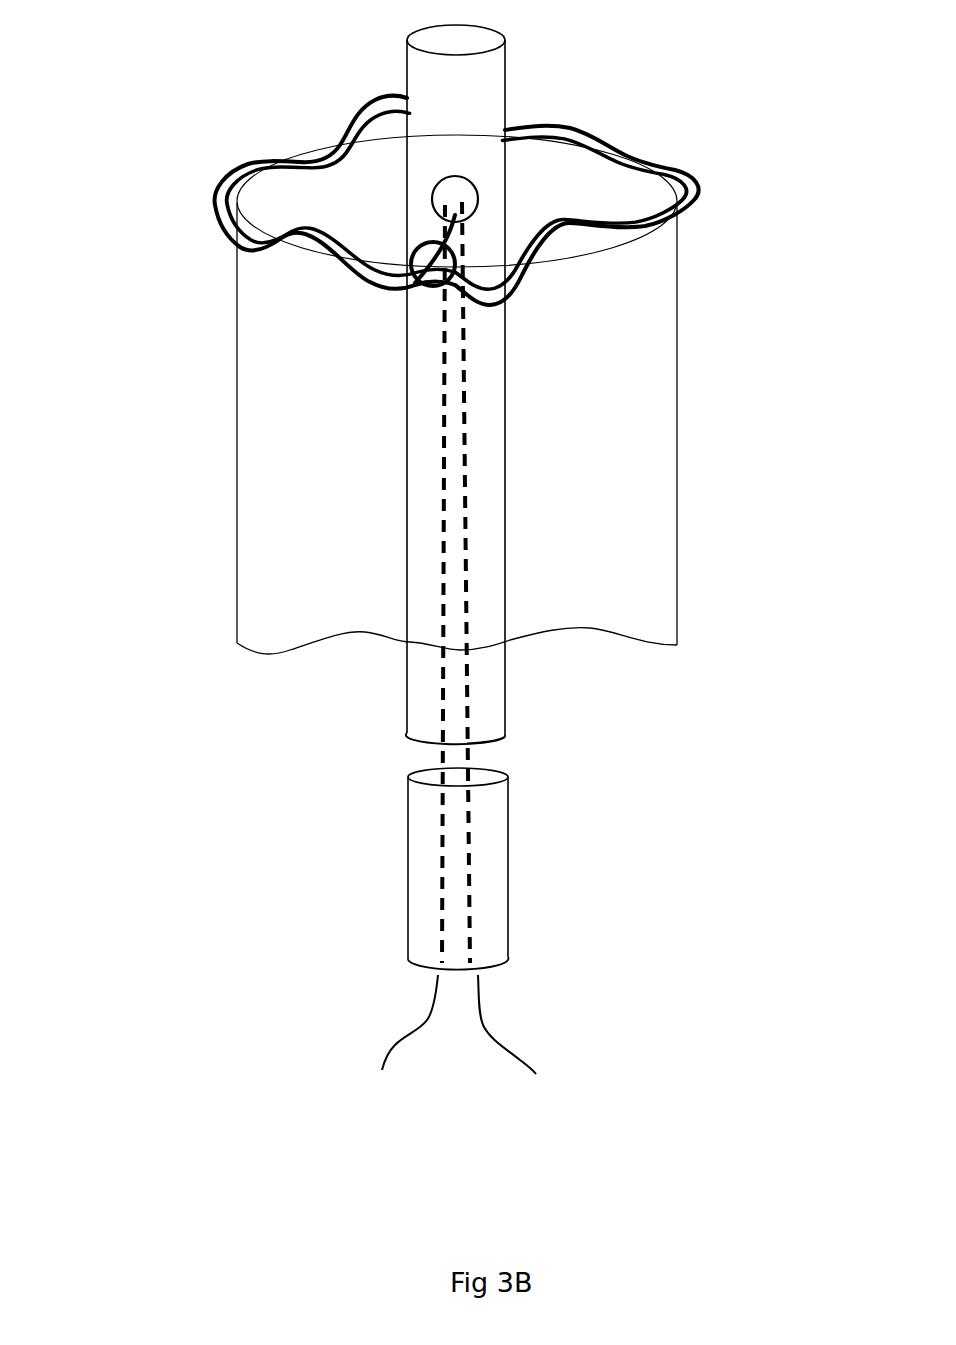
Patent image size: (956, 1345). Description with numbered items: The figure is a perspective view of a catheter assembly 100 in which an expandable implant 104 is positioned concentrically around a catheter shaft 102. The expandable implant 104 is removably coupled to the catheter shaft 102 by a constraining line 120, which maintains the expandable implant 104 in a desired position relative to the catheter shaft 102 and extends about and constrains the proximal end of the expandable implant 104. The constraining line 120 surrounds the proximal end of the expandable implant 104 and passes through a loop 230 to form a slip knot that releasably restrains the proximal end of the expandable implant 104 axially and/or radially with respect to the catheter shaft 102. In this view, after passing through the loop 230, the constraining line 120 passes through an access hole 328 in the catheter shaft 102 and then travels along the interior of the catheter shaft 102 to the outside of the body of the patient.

The catheter assembly 100 is at (491, 497).
The catheter shaft 102 is at (503, 848).
The expandable implant 104 is at (258, 353).
The constraining line 120 is at (673, 172).
The loop 230 is at (413, 250).
The access hole 328 is at (450, 177).